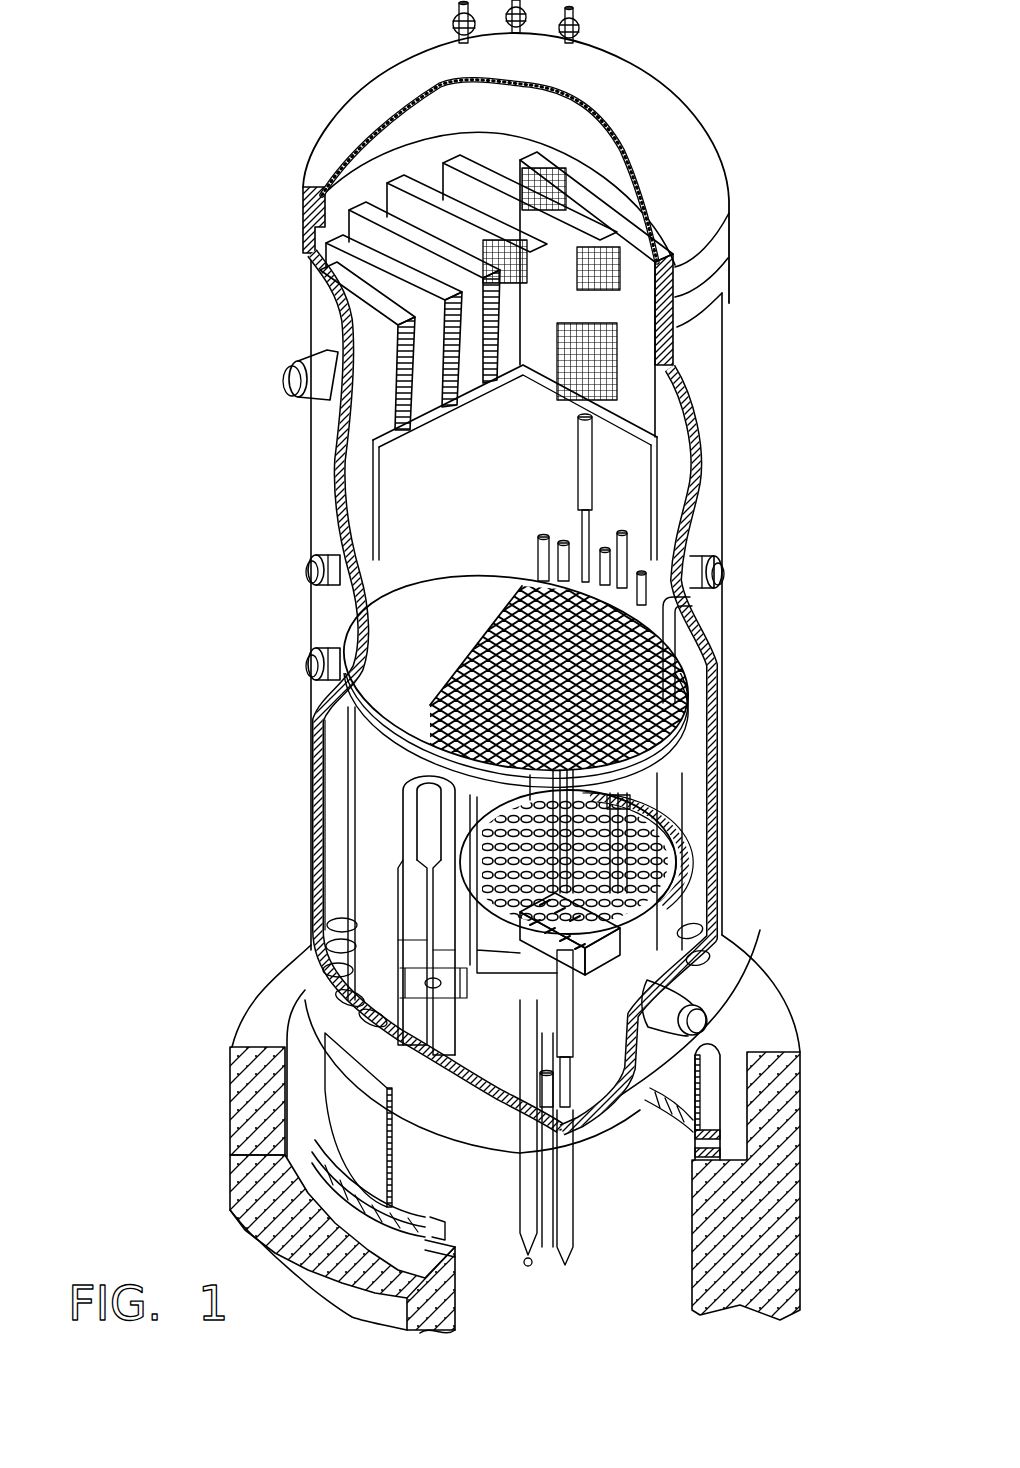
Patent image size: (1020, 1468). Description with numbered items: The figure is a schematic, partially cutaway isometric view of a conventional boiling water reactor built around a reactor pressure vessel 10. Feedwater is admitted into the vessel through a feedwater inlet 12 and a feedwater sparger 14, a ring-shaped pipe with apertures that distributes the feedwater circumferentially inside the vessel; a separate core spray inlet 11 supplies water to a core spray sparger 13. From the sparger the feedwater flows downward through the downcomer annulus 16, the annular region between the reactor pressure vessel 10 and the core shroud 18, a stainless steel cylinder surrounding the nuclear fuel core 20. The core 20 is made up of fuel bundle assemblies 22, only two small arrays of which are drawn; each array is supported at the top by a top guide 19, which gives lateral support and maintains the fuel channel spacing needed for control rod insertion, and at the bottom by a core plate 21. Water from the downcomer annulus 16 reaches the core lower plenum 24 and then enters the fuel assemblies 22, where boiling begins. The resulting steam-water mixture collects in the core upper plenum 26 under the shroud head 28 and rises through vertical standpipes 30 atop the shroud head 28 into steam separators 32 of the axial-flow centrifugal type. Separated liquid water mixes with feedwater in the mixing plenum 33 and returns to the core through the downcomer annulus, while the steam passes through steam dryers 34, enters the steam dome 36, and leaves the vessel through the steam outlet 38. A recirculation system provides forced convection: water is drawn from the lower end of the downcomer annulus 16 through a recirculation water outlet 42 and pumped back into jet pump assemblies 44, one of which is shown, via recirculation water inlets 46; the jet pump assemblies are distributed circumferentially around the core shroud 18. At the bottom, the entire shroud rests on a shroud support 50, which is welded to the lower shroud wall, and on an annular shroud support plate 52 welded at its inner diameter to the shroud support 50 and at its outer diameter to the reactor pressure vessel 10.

The reactor pressure vessel 10 is at (312, 887).
The core spray inlet 11 is at (320, 573).
The feedwater inlet 12 is at (722, 582).
The core spray sparger 13 is at (357, 600).
The feedwater sparger 14 is at (667, 582).
The downcomer annulus 16 is at (330, 856).
The core shroud 18 is at (360, 750).
The top guide 19 is at (660, 650).
The nuclear fuel core 20 is at (668, 800).
The core plate 21 is at (660, 872).
The fuel bundle assemblies 22 is at (598, 786).
The core lower plenum 24 is at (590, 1075).
The core upper plenum 26 is at (515, 588).
The shroud head 28 is at (463, 543).
The vertical standpipes 30 is at (623, 537).
The steam separators 32 is at (578, 447).
The mixing plenum 33 is at (548, 479).
The steam dryers 34 is at (520, 316).
The steam dome 36 is at (428, 110).
The steam outlet 38 is at (290, 372).
The recirculation water outlet 42 is at (693, 1020).
The jet pump assemblies 44 is at (390, 836).
The recirculation water inlets 46 is at (437, 982).
The shroud support 50 is at (360, 960).
The annular shroud support plate 52 is at (335, 930).